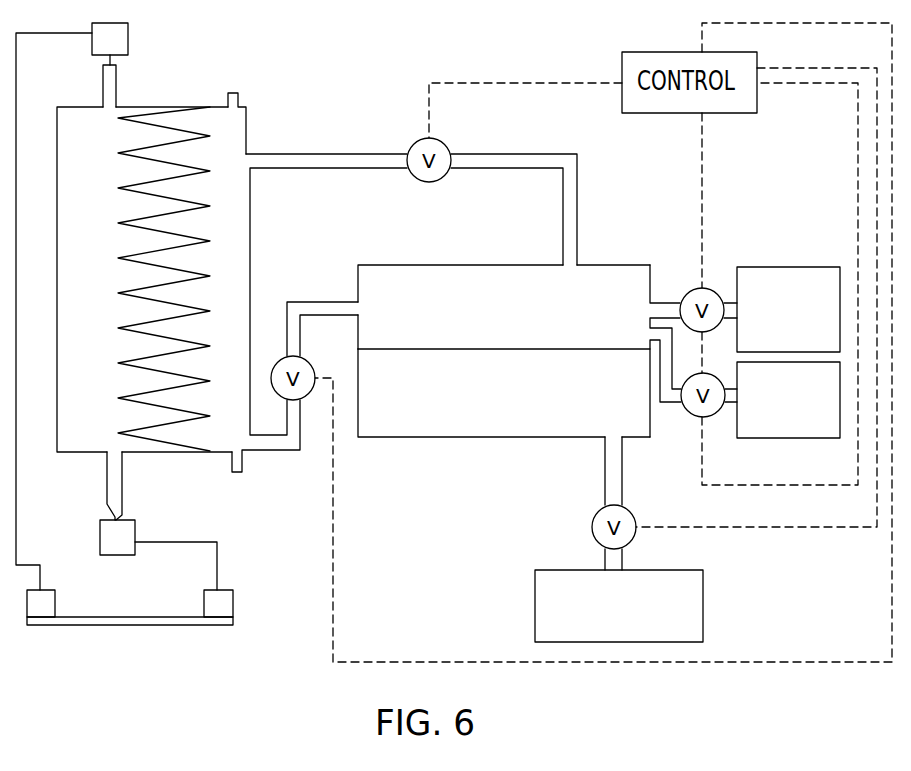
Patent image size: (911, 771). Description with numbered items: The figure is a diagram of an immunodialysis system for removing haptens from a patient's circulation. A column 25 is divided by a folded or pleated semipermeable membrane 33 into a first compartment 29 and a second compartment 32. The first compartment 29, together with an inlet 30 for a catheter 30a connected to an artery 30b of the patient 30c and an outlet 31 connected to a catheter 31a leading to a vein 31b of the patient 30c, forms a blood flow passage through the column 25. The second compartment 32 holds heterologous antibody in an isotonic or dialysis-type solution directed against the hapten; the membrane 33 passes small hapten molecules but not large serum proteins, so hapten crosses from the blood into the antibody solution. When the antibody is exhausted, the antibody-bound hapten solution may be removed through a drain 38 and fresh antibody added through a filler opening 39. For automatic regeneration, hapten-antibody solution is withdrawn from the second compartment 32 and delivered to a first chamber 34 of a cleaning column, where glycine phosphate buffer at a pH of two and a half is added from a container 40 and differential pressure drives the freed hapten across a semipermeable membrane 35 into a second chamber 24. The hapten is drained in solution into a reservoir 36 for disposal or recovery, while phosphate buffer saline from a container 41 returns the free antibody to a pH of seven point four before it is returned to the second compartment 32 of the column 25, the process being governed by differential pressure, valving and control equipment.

The second chamber of the cleaning column 24 is at (405, 430).
The column 25 is at (250, 147).
The first compartment 29 is at (68, 341).
The inlet 30 is at (117, 67).
The catheter 30a is at (128, 37).
The artery 30b is at (55, 600).
The patient 30c is at (78, 627).
The outlet 31 is at (125, 477).
The catheter 31a is at (135, 525).
The vein 31b is at (233, 596).
The second compartment 32 is at (237, 200).
The semipermeable membrane 33 is at (168, 128).
The first chamber of the cleaning column 34 is at (432, 265).
The semipermeable membrane 35 is at (383, 349).
The reservoir 36 is at (705, 585).
The drain 38 is at (243, 468).
The filler opening 39 is at (238, 94).
The container 40 is at (757, 267).
The container 41 is at (755, 438).